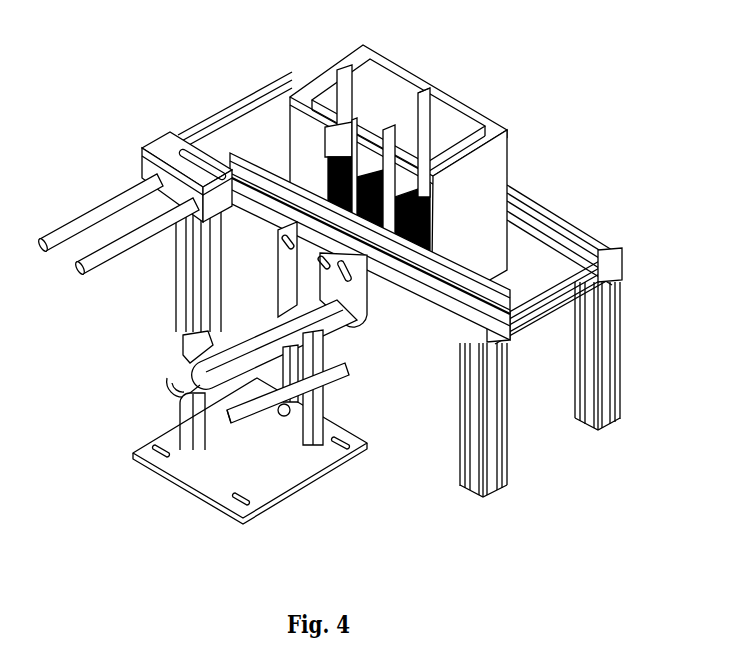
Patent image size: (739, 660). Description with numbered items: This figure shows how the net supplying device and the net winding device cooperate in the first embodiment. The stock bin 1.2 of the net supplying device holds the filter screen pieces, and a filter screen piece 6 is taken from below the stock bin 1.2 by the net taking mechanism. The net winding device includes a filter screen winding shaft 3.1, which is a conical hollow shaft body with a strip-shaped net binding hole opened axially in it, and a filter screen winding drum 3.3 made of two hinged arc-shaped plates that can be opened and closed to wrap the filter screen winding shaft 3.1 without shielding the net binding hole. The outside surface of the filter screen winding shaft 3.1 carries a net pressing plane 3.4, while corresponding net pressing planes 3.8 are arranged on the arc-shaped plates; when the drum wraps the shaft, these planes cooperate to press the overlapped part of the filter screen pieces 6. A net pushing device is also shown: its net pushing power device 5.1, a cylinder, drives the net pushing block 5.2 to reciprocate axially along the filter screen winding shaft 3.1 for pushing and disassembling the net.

The stock bin 1.2 is at (435, 118).
The net pushing power device 5.1 is at (157, 147).
The net pushing block 5.2 is at (282, 218).
The filter screen winding shaft 3.1 is at (167, 380).
The filter screen winding drum 3.3 is at (227, 397).
The net pressing plane 3.4 is at (200, 332).
The net pressing planes 3.8 is at (230, 400).
The filter screen piece 6 is at (277, 377).